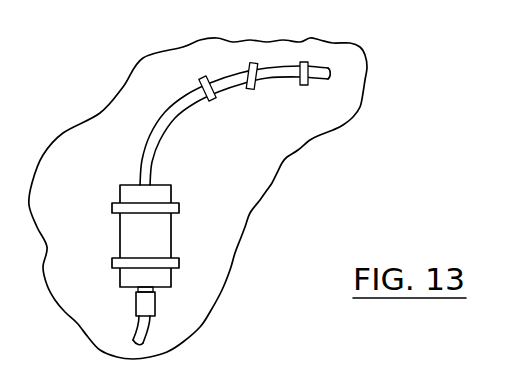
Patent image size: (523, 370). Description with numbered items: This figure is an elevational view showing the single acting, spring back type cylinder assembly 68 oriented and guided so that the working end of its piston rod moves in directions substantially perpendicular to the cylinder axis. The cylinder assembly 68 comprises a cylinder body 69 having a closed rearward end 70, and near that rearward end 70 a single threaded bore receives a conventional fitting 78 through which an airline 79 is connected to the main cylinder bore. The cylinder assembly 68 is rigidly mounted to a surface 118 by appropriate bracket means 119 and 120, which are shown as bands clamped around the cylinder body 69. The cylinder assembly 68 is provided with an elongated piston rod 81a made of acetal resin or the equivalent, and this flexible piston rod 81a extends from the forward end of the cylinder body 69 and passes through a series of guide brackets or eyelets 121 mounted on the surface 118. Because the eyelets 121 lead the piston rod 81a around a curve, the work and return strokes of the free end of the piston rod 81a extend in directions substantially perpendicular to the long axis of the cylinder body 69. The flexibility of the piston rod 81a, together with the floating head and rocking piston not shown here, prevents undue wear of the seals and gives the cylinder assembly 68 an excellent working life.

The cylinder assembly 68 is at (181, 270).
The cylinder body 69 is at (160, 247).
The closed rearward end 70 is at (130, 288).
The fitting 78 is at (150, 303).
The airline 79 is at (150, 325).
The elongated piston rod 81a is at (158, 150).
The surface 118 is at (267, 175).
The bracket means 119 is at (112, 208).
The bracket means 120 is at (112, 263).
The guide brackets or eyelets 121 is at (200, 80).